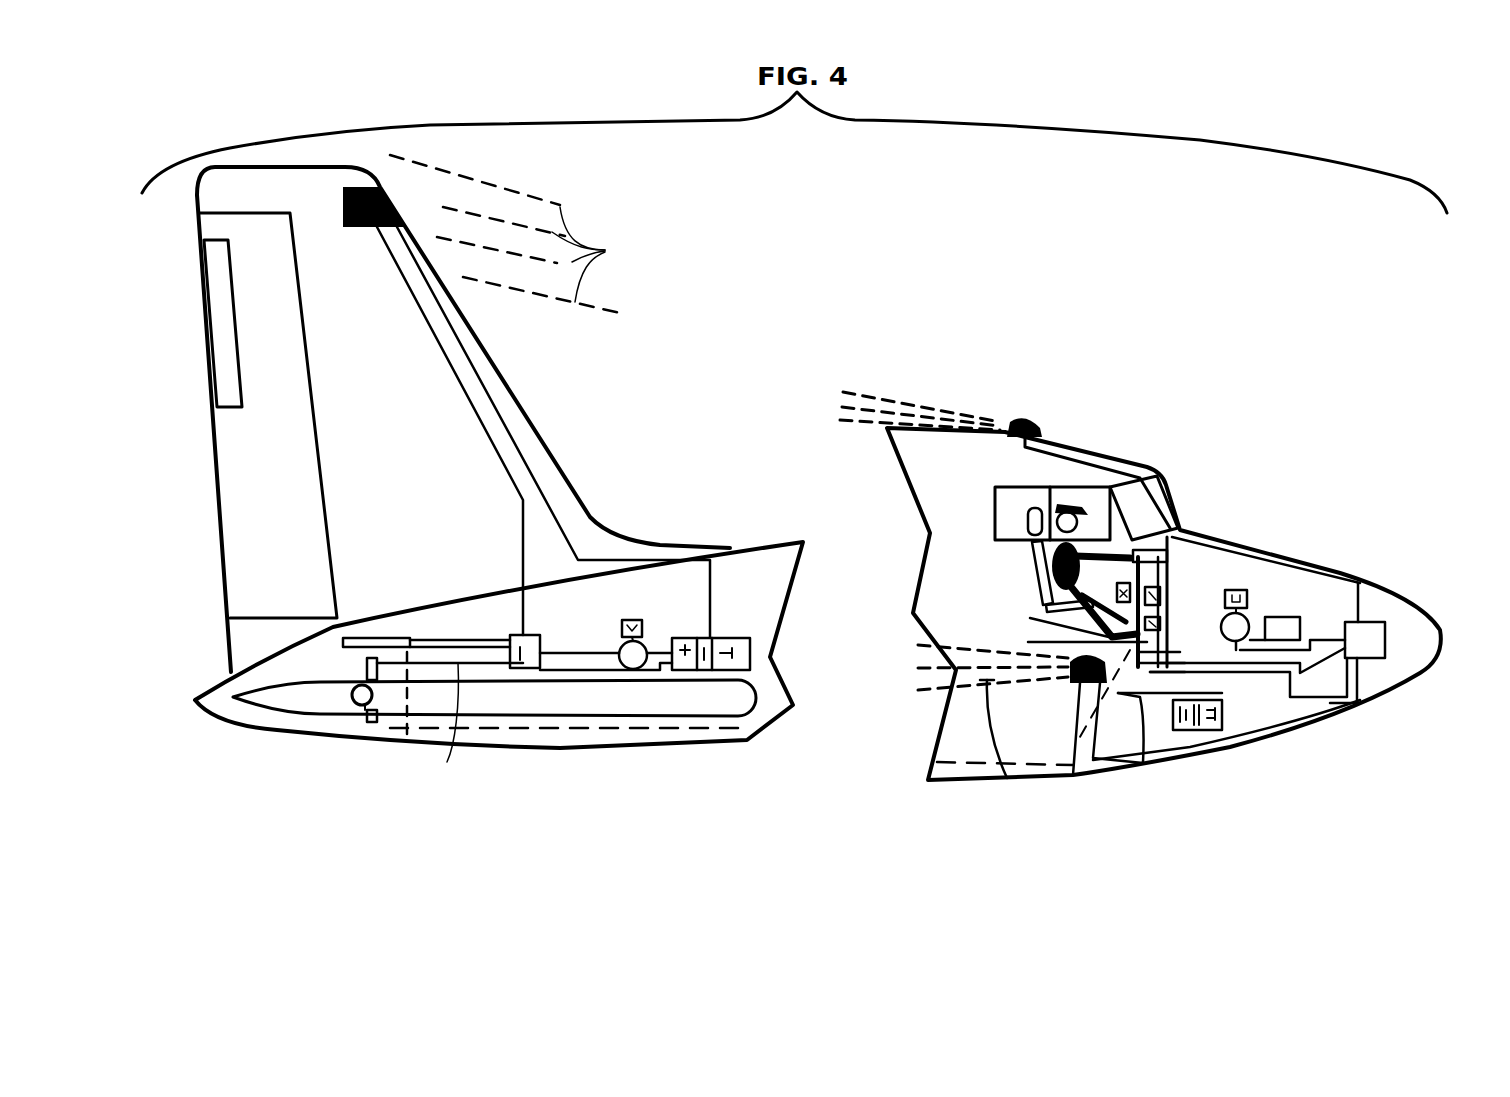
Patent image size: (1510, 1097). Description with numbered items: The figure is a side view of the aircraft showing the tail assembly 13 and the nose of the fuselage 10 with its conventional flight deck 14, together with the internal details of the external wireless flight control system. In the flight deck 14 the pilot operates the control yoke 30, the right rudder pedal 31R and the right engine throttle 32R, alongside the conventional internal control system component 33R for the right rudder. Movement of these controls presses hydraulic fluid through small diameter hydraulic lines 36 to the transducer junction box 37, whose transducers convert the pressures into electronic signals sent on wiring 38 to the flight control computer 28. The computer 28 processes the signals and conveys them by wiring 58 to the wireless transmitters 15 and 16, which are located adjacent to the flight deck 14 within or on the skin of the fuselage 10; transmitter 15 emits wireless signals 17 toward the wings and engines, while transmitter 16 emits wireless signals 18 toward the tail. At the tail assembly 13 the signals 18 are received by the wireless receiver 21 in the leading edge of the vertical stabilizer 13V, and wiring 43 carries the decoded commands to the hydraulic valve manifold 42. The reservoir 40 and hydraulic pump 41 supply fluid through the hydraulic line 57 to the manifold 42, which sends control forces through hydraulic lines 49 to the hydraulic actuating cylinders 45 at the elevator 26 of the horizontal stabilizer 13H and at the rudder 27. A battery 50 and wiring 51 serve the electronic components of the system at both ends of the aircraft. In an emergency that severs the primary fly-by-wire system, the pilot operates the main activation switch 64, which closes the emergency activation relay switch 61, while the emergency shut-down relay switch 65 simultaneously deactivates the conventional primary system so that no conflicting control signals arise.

The fuselage 10 is at (922, 454).
The tail assembly 13 is at (748, 585).
The vertical stabilizer of tail assembly 13V is at (413, 418).
The horizontal stabilizer of tail assembly 13H is at (492, 698).
The flight deck area 14 is at (1130, 502).
The wireless transmitters to wings and engines 15 is at (1073, 775).
The wireless transmitter to tail assembly 16 is at (1028, 432).
The visible wireless signals to engine and wing control surfaces 17 is at (1005, 743).
The visible wireless signals to tail assembly control surfaces 18 is at (943, 388).
The wireless receivers for tail assembly flight control surfaces 21 is at (380, 188).
The elevator control surface 26 is at (255, 690).
The rudder control surface 27 is at (257, 515).
The wireless system conventional flight control computer 28 is at (1386, 642).
The pilot's control yoke 30 is at (1170, 555).
The pilot's rudder pedal, right 31R is at (1067, 666).
The engine throttle, right 32R is at (1170, 578).
The conventional internal control system component, right rudder 33R is at (787, 728).
The hydraulic lines from pilot's controls 36 is at (1225, 688).
The conventional transducer junction box 37 is at (1287, 620).
The wiring from transducer to flight computer 38 is at (1323, 640).
The hydraulic reservoir 40 is at (640, 620).
The hydraulic pump 41 is at (648, 650).
The hydraulic valve manifold 42 is at (520, 668).
The wiring from wireless receiver to valve manifold 43 is at (508, 487).
The hydraulic actuating cylinder 45 is at (368, 672).
The hydraulic lines 49 is at (432, 643).
The battery 50 is at (733, 637).
The wiring to electronic components 51 is at (598, 650).
The hydraulic line from pump to valve manifold 57 is at (570, 657).
The wiring from flight computer to transmitter 58 is at (1092, 462).
The emergency activation relay switch 61 is at (1124, 588).
The pilot operated main activation switch 64 is at (1180, 528).
The emergency shut-down relay switch, primary system 65 is at (1168, 612).